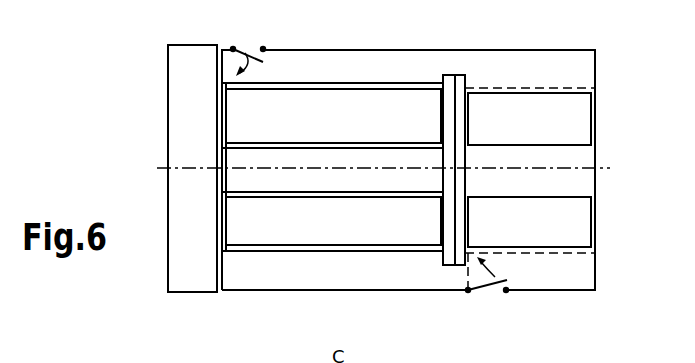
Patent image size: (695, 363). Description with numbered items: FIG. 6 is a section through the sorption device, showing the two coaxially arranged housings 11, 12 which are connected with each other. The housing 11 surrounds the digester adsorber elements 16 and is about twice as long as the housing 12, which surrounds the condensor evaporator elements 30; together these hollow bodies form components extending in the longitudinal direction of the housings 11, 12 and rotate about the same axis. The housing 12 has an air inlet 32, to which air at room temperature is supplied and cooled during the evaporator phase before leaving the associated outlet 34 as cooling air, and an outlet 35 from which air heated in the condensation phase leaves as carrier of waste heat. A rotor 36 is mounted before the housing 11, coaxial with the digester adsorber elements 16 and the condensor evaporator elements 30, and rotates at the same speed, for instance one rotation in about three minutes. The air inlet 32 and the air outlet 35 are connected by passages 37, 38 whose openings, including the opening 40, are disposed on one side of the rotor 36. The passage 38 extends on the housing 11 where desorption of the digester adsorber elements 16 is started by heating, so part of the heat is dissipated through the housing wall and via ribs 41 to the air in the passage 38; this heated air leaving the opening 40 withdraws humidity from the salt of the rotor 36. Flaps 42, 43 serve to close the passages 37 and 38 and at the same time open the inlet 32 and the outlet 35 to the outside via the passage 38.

The housing 11 is at (362, 292).
The housing 12 is at (596, 221).
The digester adsorber elements 16 is at (311, 123).
The condensor evaporator elements 30 is at (523, 122).
The air inlet 32 is at (524, 276).
The outlet 34 is at (455, 75).
The outlet 35 is at (525, 83).
The rotor 36 is at (181, 223).
The passage 37 is at (314, 280).
The passage 38 is at (330, 50).
The opening 40 is at (234, 48).
The ribs 41 is at (336, 75).
The flap 42 is at (487, 292).
The flap 43 is at (270, 50).